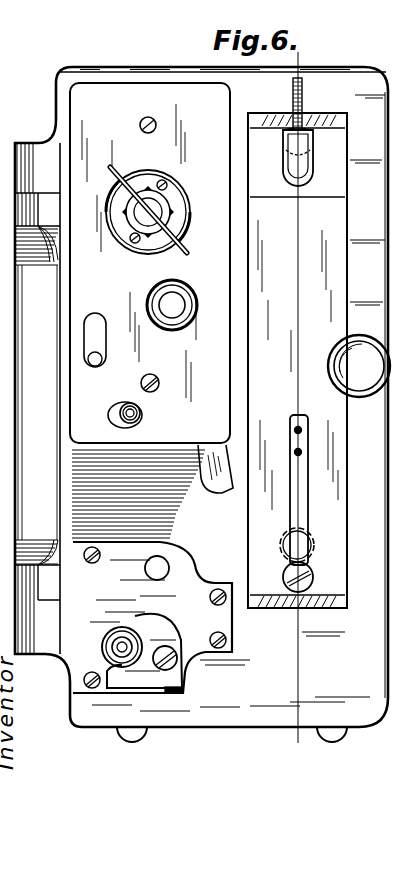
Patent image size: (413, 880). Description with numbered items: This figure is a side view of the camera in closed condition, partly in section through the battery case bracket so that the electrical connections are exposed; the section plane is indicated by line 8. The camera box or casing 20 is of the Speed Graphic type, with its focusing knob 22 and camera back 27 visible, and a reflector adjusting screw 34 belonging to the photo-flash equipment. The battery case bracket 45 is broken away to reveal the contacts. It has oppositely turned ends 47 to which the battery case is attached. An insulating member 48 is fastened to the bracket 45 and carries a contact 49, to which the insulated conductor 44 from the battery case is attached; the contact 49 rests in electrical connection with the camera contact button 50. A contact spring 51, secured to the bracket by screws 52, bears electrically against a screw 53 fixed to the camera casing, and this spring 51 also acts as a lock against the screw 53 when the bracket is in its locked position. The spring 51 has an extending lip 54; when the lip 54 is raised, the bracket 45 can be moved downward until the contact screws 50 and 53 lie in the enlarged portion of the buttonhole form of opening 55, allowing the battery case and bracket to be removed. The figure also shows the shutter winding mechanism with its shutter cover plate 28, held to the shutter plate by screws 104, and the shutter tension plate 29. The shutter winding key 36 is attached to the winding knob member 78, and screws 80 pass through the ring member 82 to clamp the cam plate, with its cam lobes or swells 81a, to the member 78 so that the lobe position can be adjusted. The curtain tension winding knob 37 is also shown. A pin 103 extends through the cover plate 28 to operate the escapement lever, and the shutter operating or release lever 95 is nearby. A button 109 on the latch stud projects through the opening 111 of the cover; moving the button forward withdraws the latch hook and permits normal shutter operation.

The section line 8- 8 is at (297, 52).
The camera box or casing 20 is at (146, 73).
The focusing knob 22 is at (362, 387).
The camera back 27 is at (331, 400).
The shutter cover plate 28 is at (76, 94).
The shutter tension plate 29 is at (163, 553).
The reflector adjusting screw 34 is at (172, 305).
The shutter winding key 36 is at (110, 169).
The curtain tension winding knob 37 is at (122, 628).
The insulated conductor 44 is at (293, 88).
The battery case bracket 45 is at (335, 298).
The oppositely turned ends 47 is at (318, 602).
The insulating member 48 is at (333, 193).
The contact 49 is at (290, 151).
The camera contact button 50 is at (290, 193).
The contact spring 51 is at (300, 483).
The screws 52 is at (295, 427).
The screw 53 is at (313, 578).
The lip 54 is at (283, 554).
The buttonhole form of opening 55 is at (310, 151).
The winding knob member 78 is at (172, 219).
The screws 80 is at (157, 185).
The cam lobes or swells 81a is at (183, 191).
The ring member 82 is at (176, 210).
The shutter operating or release lever 95 is at (215, 485).
The pin 103 is at (99, 366).
The screws 104 is at (140, 126).
The button 109 is at (141, 421).
The opening 111 is at (110, 418).